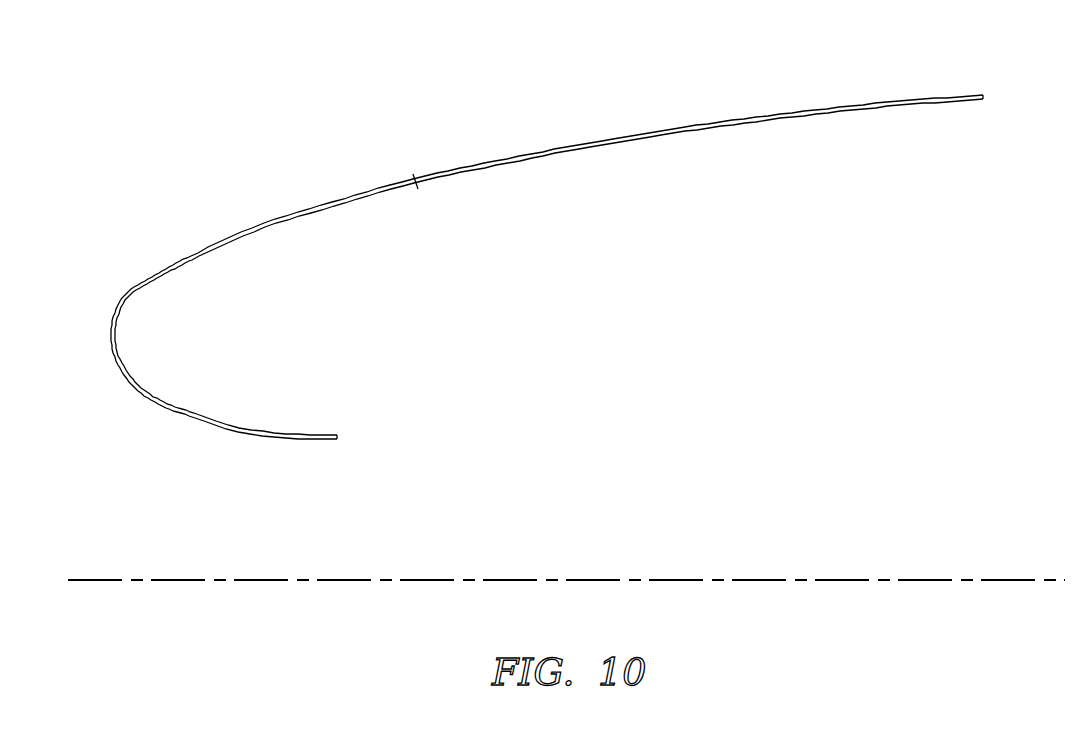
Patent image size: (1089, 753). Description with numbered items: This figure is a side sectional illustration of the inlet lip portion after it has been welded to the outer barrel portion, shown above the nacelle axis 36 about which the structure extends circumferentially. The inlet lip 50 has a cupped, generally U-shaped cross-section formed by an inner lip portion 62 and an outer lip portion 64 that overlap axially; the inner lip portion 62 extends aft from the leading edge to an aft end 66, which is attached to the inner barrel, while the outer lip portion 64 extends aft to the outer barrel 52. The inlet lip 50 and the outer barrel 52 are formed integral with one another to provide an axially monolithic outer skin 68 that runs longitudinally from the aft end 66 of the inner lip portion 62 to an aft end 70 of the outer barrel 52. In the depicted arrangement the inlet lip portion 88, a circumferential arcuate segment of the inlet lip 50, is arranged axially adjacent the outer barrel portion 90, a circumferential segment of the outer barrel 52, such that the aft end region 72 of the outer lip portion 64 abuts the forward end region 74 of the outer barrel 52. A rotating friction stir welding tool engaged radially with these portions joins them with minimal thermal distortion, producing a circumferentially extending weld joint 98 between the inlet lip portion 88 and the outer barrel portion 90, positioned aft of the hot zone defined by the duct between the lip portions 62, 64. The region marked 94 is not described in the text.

The axis 36 is at (105, 582).
The inlet lip 50 is at (121, 398).
The outer barrel 52 is at (729, 102).
The inner lip portion 62 is at (240, 433).
The outer lip portion 64 is at (260, 227).
The aft end of the inner lip portion 66 is at (340, 437).
The axially monolithic outer skin 68 is at (537, 155).
The aft end of the outer barrel 70 is at (985, 97).
The aft end region of the outer lip portion 72 is at (402, 194).
The forward end region of the outer barrel 74 is at (427, 170).
The inlet lip portion 88 is at (128, 297).
The outer barrel portion 90 is at (858, 105).
The forward section 94 is at (373, 188).
The weld joint 98 is at (420, 190).